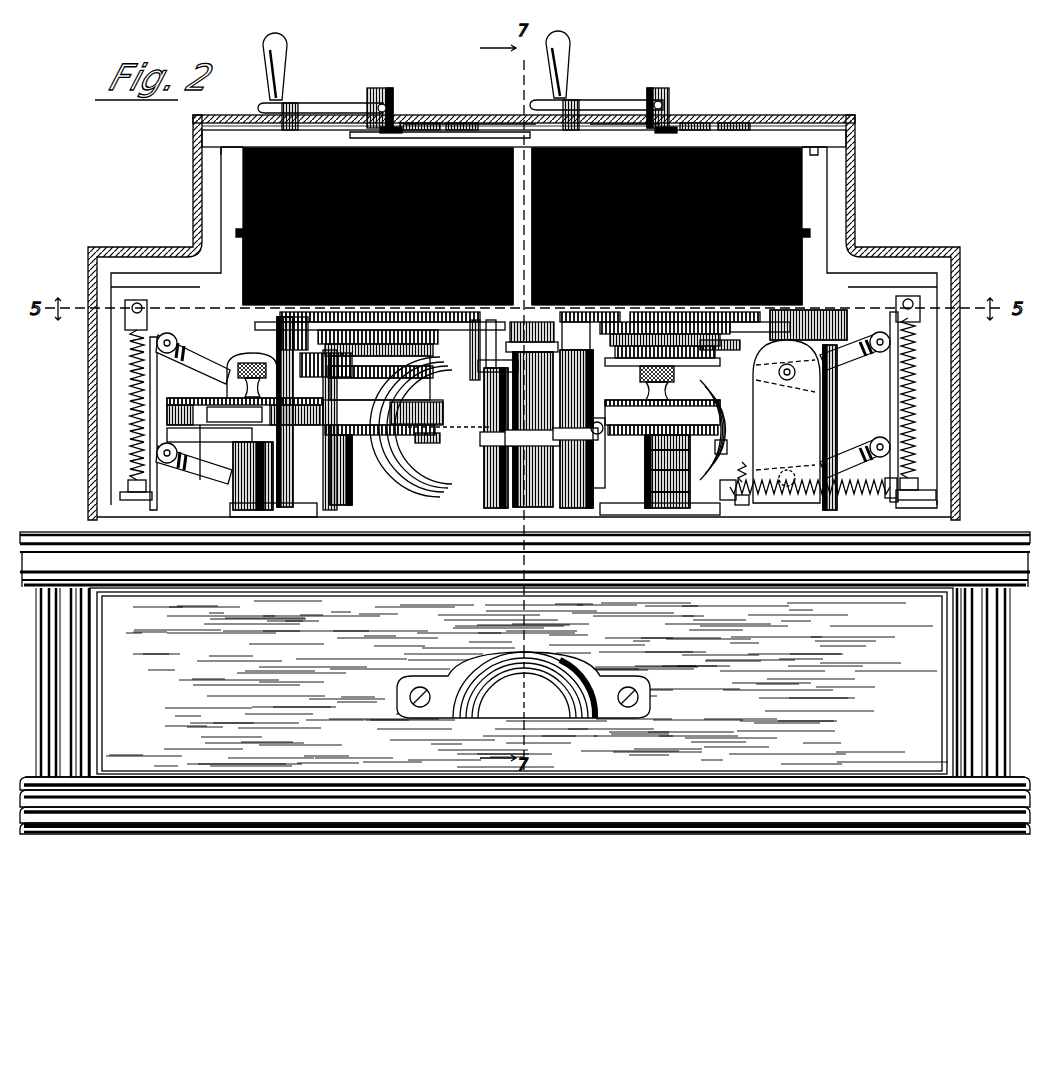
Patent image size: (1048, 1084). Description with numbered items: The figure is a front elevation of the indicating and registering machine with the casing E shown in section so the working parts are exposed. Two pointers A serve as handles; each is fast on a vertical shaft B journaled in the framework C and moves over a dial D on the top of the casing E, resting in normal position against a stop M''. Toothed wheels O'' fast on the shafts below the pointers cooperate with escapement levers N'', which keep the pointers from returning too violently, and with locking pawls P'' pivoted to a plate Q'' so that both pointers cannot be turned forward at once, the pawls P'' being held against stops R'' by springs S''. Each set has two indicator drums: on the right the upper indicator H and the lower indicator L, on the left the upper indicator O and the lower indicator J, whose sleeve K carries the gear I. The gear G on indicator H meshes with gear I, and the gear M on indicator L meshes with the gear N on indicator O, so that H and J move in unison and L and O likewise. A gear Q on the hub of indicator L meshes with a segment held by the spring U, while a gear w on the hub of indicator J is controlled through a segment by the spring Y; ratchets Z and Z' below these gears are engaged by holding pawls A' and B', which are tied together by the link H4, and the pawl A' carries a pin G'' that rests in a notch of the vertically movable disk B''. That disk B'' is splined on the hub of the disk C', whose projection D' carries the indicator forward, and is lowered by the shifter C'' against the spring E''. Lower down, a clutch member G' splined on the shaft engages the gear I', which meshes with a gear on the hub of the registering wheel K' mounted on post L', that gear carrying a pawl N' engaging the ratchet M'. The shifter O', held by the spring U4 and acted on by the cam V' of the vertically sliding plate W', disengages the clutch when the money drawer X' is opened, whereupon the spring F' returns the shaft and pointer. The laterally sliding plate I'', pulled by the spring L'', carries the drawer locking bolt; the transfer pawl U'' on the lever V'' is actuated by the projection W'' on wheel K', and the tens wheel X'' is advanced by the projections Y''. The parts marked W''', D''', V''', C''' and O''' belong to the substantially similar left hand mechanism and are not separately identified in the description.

The coiled spring F' is at (437, 65).
The pointer A is at (524, 101).
The stop M'' is at (446, 99).
The vertical shaft B is at (521, 93).
The locking pawl P'' is at (546, 99).
The spring S'' is at (532, 99).
The toothed wheel O'' is at (559, 110).
The escapement lever N'' is at (602, 109).
The plate Q'' is at (440, 118).
The dial D is at (524, 306).
The stop R'' is at (524, 140).
The casing E is at (524, 326).
The gear I is at (376, 226).
The upper left hand indicator O is at (368, 226).
The gear N is at (201, 229).
The lower left hand indicator J is at (243, 252).
The framework C is at (524, 287).
The gear G is at (814, 163).
The upper right hand indicator H is at (802, 194).
The gear M is at (842, 222).
The lower right hand indicator L is at (840, 266).
The holding pawl B' is at (380, 309).
The gear w is at (411, 296).
The holding pawl A' is at (592, 306).
The gear Q is at (695, 303).
The spring U is at (808, 314).
The spring W''' is at (102, 400).
The lever D''' is at (190, 421).
The lever V''' is at (194, 471).
The knob arm C''' is at (243, 362).
The ratchet Z' is at (284, 361).
The pin G'' is at (295, 412).
The projections Y'' is at (369, 366).
The tens of dollars registering wheel X'' is at (245, 457).
The rod O''' is at (211, 462).
The laterally sliding plate I'' is at (384, 438).
The transfer pawl U'' is at (431, 427).
The lever V'' is at (488, 414).
The spring Y is at (508, 414).
The second shifter C'' is at (657, 402).
The link H4 is at (471, 350).
The clutch member G' is at (575, 415).
The hub or sleeve K is at (587, 444).
The vertically movable disk B'' is at (665, 348).
The registering wheel K' is at (641, 383).
The projection W'' is at (662, 454).
The post L' is at (660, 516).
The pawl N' is at (720, 430).
The shifter O' is at (731, 474).
The ratchet M' is at (713, 456).
The ratchet Z is at (751, 332).
The disk C' is at (721, 349).
The coiled spring E'' is at (786, 421).
The gear I' is at (799, 427).
The coiled spring U4 is at (748, 508).
The spring L'' is at (813, 503).
The projection D' is at (940, 407).
The vertically sliding plate W' is at (948, 387).
The cam V' is at (942, 476).
The money drawer X' is at (525, 683).